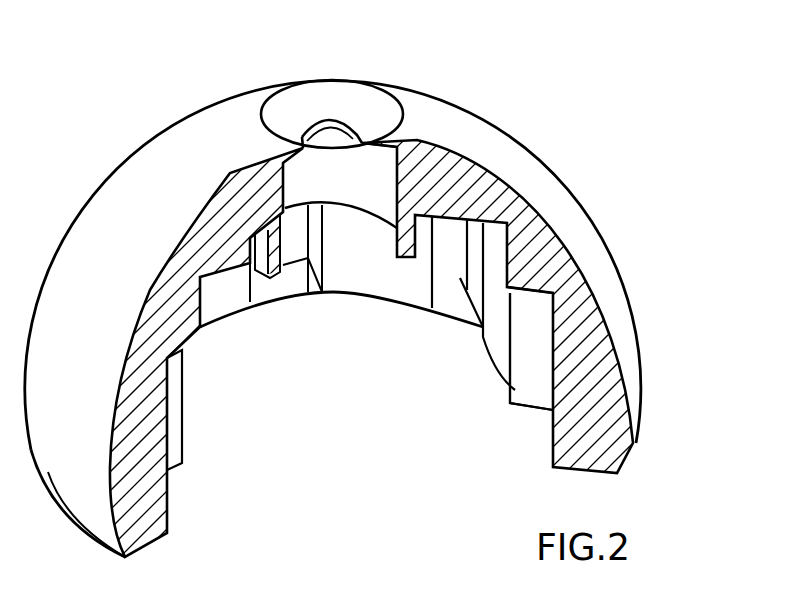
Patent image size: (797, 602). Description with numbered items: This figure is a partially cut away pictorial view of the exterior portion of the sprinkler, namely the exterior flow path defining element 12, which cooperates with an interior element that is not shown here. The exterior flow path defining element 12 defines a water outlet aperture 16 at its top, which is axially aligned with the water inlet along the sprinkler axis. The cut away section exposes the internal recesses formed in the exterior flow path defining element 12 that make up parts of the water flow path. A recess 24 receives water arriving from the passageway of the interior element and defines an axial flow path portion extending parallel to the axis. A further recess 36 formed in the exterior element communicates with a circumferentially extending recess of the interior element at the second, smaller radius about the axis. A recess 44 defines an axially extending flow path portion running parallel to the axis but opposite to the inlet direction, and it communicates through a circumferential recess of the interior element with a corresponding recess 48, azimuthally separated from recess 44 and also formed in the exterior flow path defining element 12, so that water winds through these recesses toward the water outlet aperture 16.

The exterior flow path defining element 12 is at (612, 345).
The water outlet aperture 16 is at (345, 125).
The recess 24 is at (172, 432).
The recess 36 is at (537, 385).
The recess 44 is at (460, 278).
The recess 48 is at (313, 257).